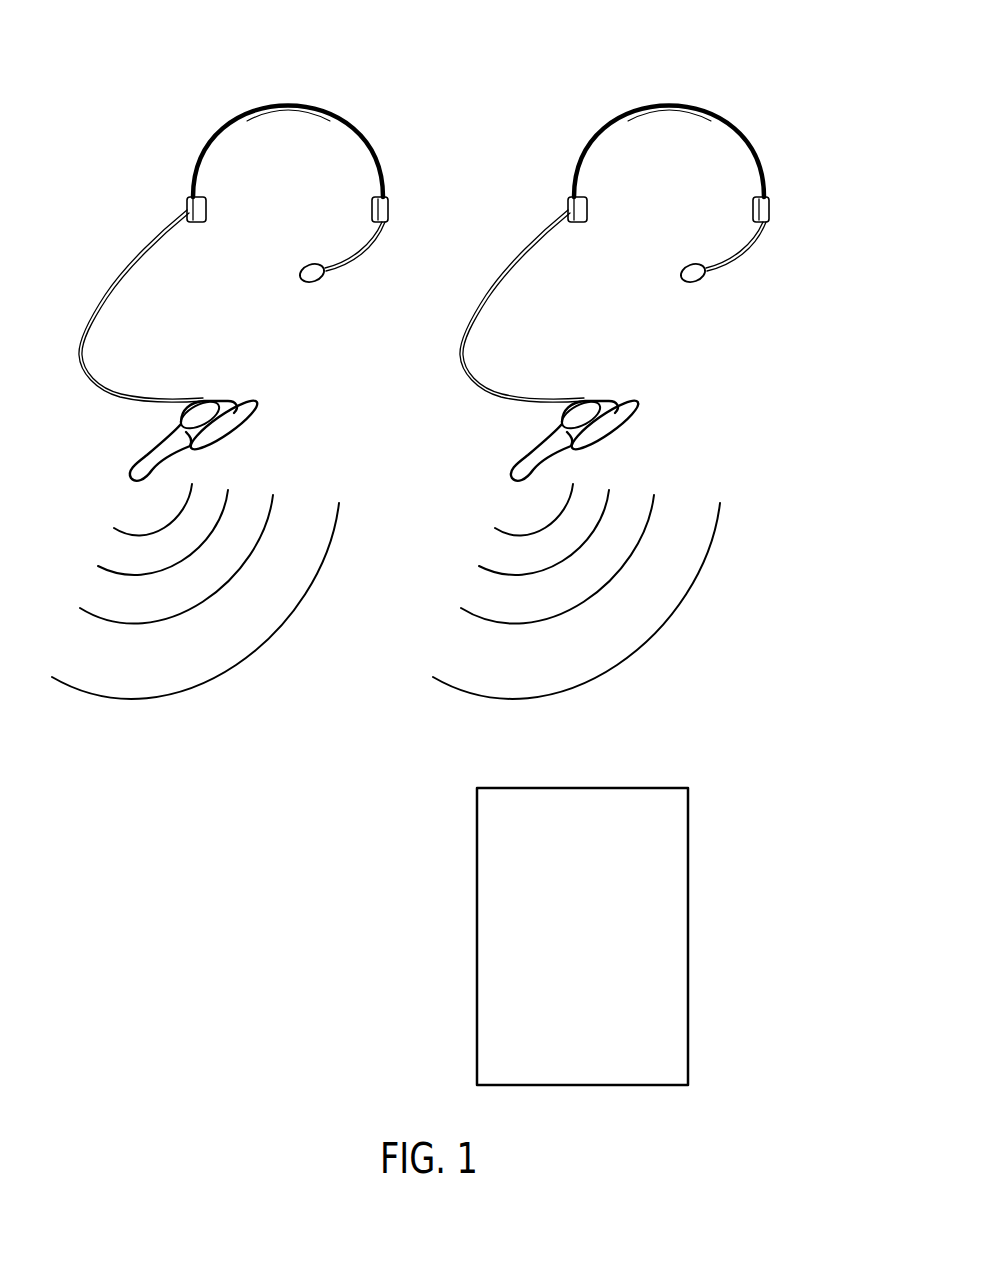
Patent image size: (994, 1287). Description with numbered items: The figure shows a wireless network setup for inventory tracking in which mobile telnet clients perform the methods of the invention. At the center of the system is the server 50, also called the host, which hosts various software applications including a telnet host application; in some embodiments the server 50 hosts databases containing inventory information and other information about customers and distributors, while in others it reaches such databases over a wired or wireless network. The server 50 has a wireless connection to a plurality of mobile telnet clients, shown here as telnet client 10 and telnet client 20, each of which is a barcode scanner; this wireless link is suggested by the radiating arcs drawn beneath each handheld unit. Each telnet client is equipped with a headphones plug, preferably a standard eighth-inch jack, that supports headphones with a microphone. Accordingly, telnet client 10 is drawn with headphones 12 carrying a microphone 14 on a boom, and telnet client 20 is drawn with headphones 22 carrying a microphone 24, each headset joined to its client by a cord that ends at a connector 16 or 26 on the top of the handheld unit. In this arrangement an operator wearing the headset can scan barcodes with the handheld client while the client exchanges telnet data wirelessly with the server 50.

The telnet client 10 is at (147, 463).
The headphones 12 is at (229, 126).
The microphone 14 is at (318, 280).
The terminal connector 16 is at (203, 407).
The telnet client 20 is at (576, 546).
The headphones 22 is at (614, 234).
The microphone 24 is at (715, 317).
The second terminal connector 26 is at (581, 373).
The server 50 is at (477, 908).